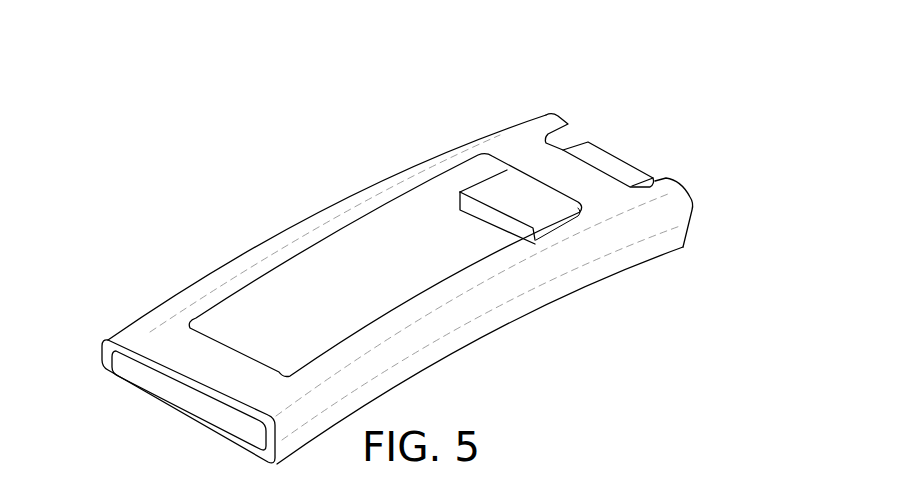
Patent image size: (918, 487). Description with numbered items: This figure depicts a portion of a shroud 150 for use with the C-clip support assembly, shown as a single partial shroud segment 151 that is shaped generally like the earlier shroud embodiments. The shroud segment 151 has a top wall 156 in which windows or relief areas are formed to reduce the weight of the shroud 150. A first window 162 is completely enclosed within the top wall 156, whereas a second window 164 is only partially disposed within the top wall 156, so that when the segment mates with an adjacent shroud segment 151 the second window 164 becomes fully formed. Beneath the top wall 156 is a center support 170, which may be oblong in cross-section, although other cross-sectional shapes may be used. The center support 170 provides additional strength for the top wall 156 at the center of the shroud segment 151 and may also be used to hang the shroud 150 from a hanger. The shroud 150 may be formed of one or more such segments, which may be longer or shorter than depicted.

The shroud 150 is at (630, 148).
The shroud segment 151 is at (694, 203).
The top wall 156 is at (533, 152).
The window 162 is at (302, 281).
The window 164 is at (580, 130).
The center support 170 is at (498, 190).